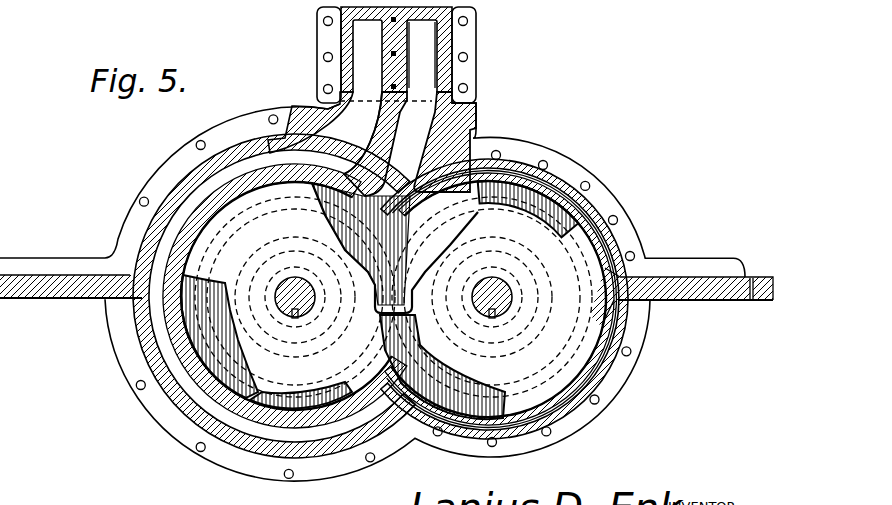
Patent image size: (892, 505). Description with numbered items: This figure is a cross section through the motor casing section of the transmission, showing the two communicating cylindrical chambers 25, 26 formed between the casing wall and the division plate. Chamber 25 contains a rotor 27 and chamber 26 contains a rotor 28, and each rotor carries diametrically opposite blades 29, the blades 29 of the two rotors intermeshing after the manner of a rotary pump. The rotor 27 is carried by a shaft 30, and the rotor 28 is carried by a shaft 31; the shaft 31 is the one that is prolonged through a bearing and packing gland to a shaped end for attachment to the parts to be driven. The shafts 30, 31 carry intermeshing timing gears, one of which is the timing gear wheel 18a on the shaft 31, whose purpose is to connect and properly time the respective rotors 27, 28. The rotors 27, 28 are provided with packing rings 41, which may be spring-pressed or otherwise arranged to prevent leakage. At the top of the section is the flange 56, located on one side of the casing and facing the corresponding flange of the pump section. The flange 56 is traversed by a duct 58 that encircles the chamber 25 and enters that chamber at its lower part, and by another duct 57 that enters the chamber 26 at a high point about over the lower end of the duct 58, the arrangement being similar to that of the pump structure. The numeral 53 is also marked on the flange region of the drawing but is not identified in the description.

The timing gear wheel 18a is at (585, 312).
The cylindrical chamber 25 is at (207, 385).
The cylindrical chamber 26 is at (576, 190).
The rotor 27 is at (393, 297).
The rotor 28 is at (513, 288).
The blades 29 is at (393, 299).
The shaft 30 is at (280, 297).
The shaft 31 is at (473, 289).
The packing rings 41 is at (200, 257).
The inlet flange 53 is at (317, 12).
The flange 56 is at (470, 12).
The duct 57 is at (425, 48).
The duct 58 is at (363, 64).